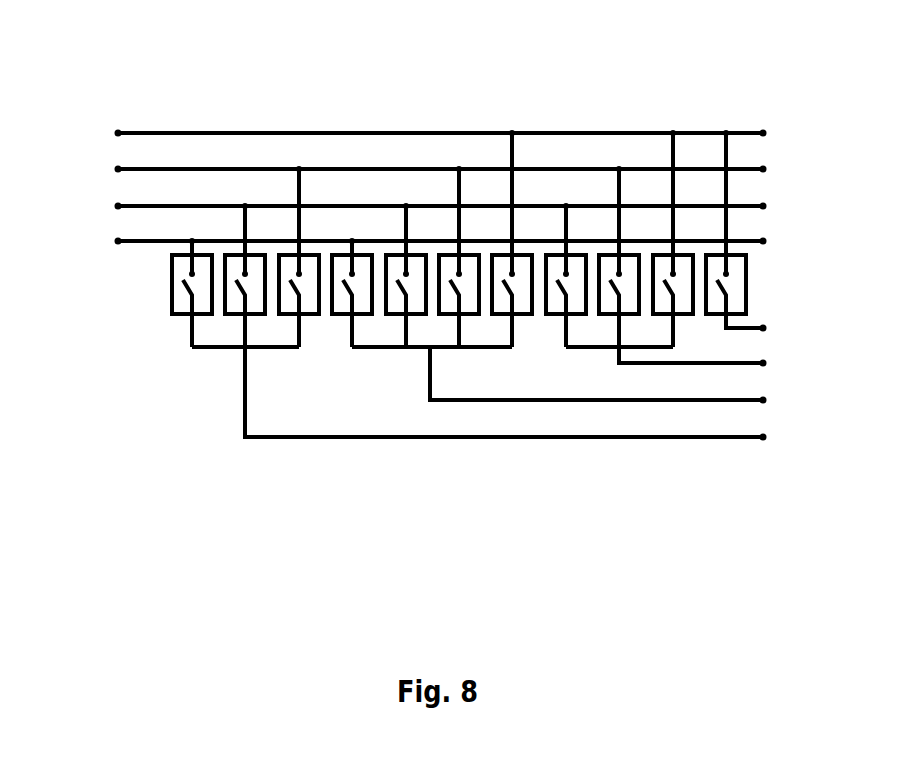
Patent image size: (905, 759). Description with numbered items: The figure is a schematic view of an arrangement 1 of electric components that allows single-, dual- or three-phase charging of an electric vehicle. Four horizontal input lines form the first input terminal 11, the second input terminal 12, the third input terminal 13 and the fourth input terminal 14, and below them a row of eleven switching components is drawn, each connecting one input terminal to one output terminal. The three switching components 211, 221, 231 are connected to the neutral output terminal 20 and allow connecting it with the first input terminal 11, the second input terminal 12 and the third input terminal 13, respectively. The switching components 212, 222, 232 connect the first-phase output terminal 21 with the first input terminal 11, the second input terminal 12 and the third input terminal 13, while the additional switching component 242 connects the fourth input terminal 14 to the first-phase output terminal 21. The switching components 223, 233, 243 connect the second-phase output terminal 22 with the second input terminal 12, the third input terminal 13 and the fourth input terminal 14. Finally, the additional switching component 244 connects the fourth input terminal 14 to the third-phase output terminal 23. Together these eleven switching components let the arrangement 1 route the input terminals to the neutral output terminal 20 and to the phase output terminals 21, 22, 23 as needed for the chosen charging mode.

The arrangement 1 is at (752, 78).
The first input terminal 11 is at (118, 241).
The second input terminal 12 is at (118, 206).
The third input terminal 13 is at (118, 169).
The fourth input terminal 14 is at (118, 133).
The neutral output terminal 20 is at (766, 436).
The first-phase output terminal 21 is at (766, 399).
The second-phase output terminal 22 is at (766, 362).
The third-phase output terminal 23 is at (765, 326).
The switching component 211 is at (180, 318).
The switching component 221 is at (236, 318).
The switching component 231 is at (290, 318).
The switching component 212 is at (343, 318).
The switching component 222 is at (400, 318).
The switching component 232 is at (457, 318).
The switching component 242 is at (498, 318).
The switching component 223 is at (550, 318).
The switching component 233 is at (623, 318).
The switching component 243 is at (678, 318).
The switching component 244 is at (747, 268).